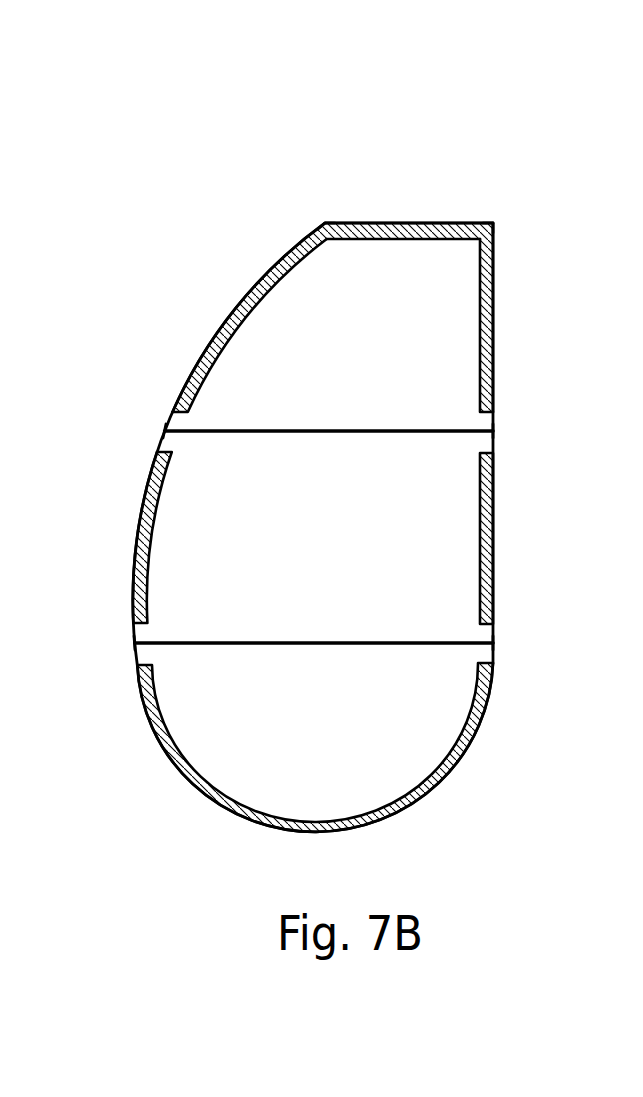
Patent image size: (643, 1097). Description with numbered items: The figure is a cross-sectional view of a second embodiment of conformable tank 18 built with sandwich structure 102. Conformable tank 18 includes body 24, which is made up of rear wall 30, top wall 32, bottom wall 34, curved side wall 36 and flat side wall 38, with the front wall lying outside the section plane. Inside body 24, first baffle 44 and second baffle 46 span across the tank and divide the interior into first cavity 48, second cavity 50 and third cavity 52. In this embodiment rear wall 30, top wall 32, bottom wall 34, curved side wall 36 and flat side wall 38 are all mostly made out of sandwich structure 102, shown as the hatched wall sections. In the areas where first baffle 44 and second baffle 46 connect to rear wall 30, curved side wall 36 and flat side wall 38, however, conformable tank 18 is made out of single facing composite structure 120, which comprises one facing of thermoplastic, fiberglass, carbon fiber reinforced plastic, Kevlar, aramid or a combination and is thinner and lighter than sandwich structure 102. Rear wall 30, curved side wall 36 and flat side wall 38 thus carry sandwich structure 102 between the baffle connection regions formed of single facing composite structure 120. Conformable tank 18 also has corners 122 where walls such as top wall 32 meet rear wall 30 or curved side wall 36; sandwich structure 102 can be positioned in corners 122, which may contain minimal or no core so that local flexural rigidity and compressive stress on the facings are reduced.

The conformable tank 18 is at (230, 122).
The body 24 is at (277, 265).
The rear wall 30 is at (425, 288).
The top wall 32 is at (400, 222).
The bottom wall 34 is at (342, 815).
The curved side wall 36 is at (152, 493).
The flat side wall 38 is at (493, 479).
The first baffle 44 is at (443, 430).
The second baffle 46 is at (227, 645).
The first cavity 48 is at (350, 339).
The second cavity 50 is at (302, 533).
The third cavity 52 is at (292, 731).
The sandwich structure 102 is at (202, 362).
The single facing composite structure 120 is at (163, 433).
The corners 122 is at (328, 223).